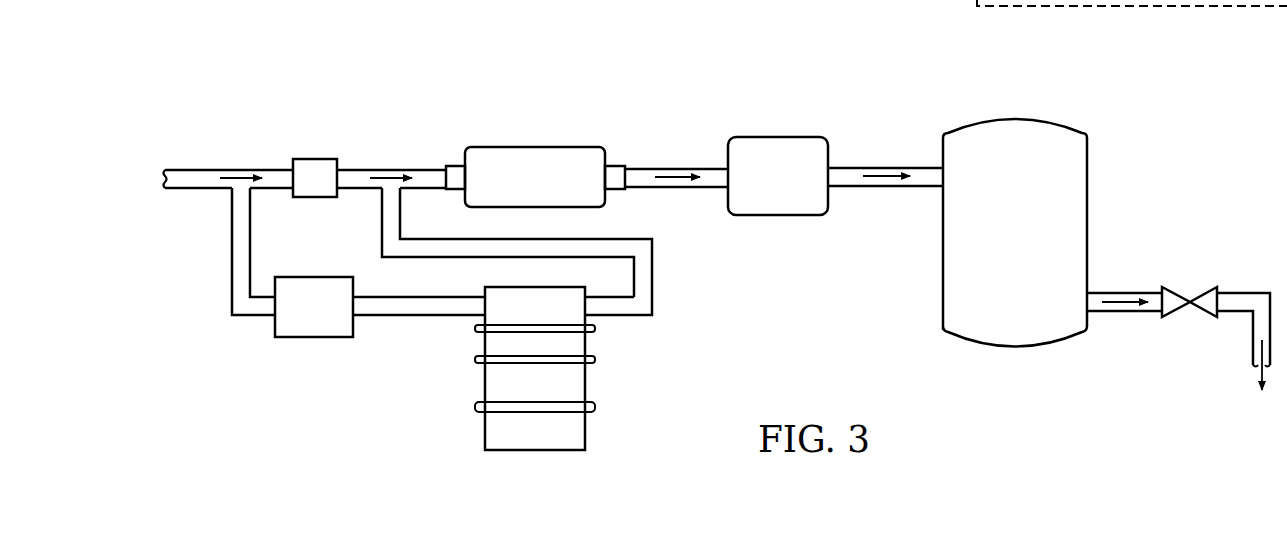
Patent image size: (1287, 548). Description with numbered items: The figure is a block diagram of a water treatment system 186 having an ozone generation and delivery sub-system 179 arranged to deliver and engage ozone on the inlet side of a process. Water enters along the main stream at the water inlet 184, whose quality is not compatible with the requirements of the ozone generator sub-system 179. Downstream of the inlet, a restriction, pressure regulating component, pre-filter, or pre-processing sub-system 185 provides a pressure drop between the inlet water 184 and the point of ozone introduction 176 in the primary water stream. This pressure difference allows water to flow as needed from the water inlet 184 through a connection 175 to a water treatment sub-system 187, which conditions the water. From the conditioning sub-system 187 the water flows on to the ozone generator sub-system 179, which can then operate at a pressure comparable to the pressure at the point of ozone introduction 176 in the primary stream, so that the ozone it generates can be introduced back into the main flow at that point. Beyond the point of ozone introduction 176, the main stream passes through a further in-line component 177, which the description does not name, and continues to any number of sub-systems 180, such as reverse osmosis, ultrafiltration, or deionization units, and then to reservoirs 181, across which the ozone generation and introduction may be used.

The connection 175 is at (250, 249).
The point of ozone introduction 176 is at (386, 169).
The gas-liquid contactor 177 is at (502, 147).
The ozone generation and delivery sub-system 179 is at (585, 381).
The sub-systems 180 is at (758, 137).
The reservoirs 181 is at (1087, 168).
The water inlet 184 is at (233, 169).
The pre-processing sub-system 185 is at (303, 159).
The water treatment system 186 is at (208, 70).
The water treatment sub-system 187 is at (314, 337).